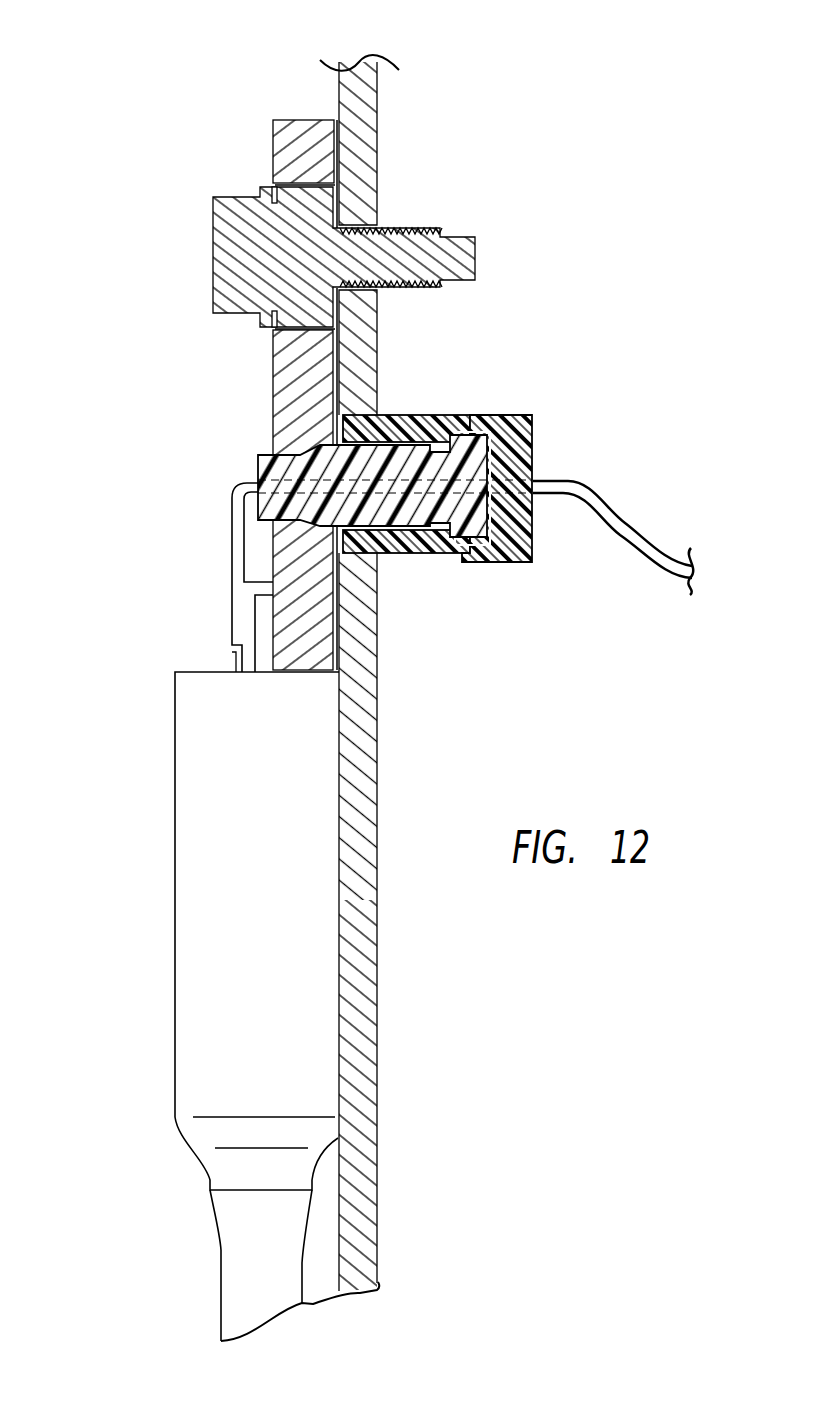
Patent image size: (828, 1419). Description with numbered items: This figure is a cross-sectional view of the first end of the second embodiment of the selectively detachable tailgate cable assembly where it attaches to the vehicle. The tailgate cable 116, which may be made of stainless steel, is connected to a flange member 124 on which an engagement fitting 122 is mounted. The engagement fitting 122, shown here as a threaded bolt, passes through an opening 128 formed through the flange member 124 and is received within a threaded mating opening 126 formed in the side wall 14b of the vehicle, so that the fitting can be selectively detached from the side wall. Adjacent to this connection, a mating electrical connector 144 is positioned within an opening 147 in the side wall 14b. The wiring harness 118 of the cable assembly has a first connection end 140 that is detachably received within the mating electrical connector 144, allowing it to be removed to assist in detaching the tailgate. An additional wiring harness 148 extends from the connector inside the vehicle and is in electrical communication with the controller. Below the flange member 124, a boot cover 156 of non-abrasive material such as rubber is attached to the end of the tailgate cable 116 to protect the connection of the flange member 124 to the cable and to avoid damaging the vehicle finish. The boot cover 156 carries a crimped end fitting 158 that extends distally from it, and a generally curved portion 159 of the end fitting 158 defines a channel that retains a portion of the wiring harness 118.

The side wall 14b is at (358, 106).
The opening 128 is at (270, 183).
The engagement fitting 122 is at (478, 258).
The mating opening 126 is at (390, 237).
The flange member 124 is at (295, 397).
The opening 147 is at (383, 414).
The first connection end 140 is at (458, 460).
The mating electrical connector 144 is at (517, 435).
The additional wiring harness 148 is at (620, 518).
The wiring harness 118 is at (228, 548).
The curved portion 159 is at (233, 645).
The crimped end fitting 158 is at (224, 658).
The boot cover 156 is at (190, 862).
The tailgate cable 116 is at (243, 1268).